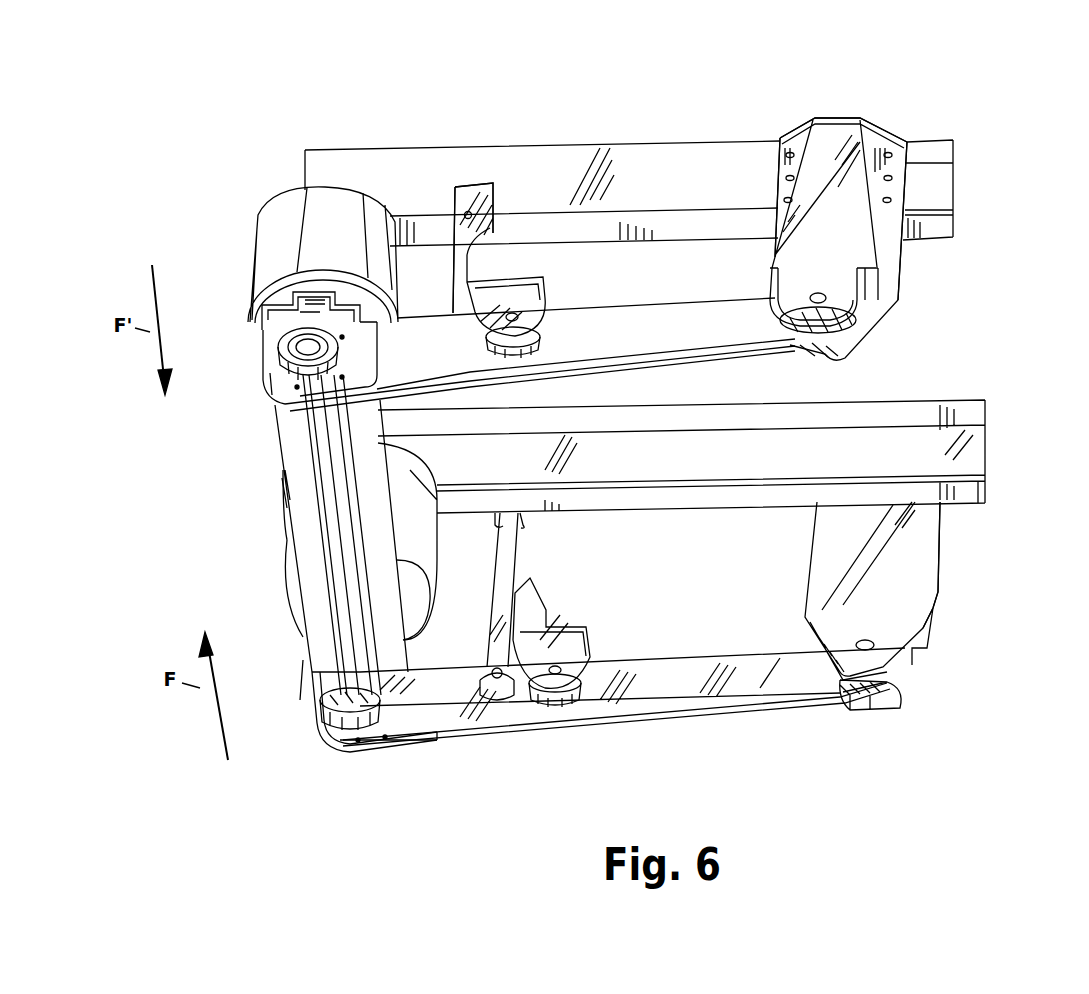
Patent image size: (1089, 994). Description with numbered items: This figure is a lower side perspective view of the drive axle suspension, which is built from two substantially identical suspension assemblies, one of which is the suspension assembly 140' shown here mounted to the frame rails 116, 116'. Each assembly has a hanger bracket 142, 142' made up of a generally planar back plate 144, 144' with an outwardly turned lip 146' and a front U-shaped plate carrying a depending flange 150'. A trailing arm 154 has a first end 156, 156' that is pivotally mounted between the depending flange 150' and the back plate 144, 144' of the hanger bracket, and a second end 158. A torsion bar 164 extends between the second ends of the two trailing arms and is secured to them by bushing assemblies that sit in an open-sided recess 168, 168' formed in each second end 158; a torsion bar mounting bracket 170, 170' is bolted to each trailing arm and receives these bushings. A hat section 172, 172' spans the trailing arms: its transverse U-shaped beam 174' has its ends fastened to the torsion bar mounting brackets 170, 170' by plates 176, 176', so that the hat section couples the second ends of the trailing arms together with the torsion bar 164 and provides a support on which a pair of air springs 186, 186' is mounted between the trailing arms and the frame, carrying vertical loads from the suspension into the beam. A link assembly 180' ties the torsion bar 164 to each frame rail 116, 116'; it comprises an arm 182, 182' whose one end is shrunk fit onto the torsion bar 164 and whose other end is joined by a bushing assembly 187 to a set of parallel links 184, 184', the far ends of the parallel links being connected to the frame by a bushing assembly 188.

The frame rail 116 is at (719, 456).
The frame rail 116' is at (603, 197).
The suspension assembly 140' is at (1010, 232).
The hanger bracket 142 is at (925, 591).
The hanger bracket 142' is at (903, 226).
The back plate 144 is at (975, 581).
The back plate 144' is at (908, 219).
The outwardly turned lip 146' is at (879, 98).
The depending flange 150' is at (871, 332).
The trailing arm 154 is at (498, 740).
The first end 156 is at (899, 732).
The first end 156' is at (893, 302).
The second end 158 is at (347, 753).
The torsion bar 164 is at (325, 480).
The open-sided recess 168 is at (388, 777).
The open-sided recess 168' is at (275, 371).
The torsion bar mounting bracket 170 is at (334, 750).
The torsion bar mounting bracket 170' is at (282, 363).
The hat section 172 is at (382, 550).
The hat section 172' is at (460, 208).
The U-shaped beam 174' is at (303, 220).
The plate 176 is at (571, 312).
The plate 176' is at (266, 244).
The link assembly 180' is at (409, 205).
The arm 182 is at (632, 735).
The arm 182' is at (540, 404).
The parallel link 184 is at (483, 606).
The parallel link 184' is at (460, 211).
The air spring 186 is at (335, 541).
The air spring 186' is at (271, 275).
The bushing assembly 187 is at (517, 700).
The bushing assembly 188 is at (470, 213).